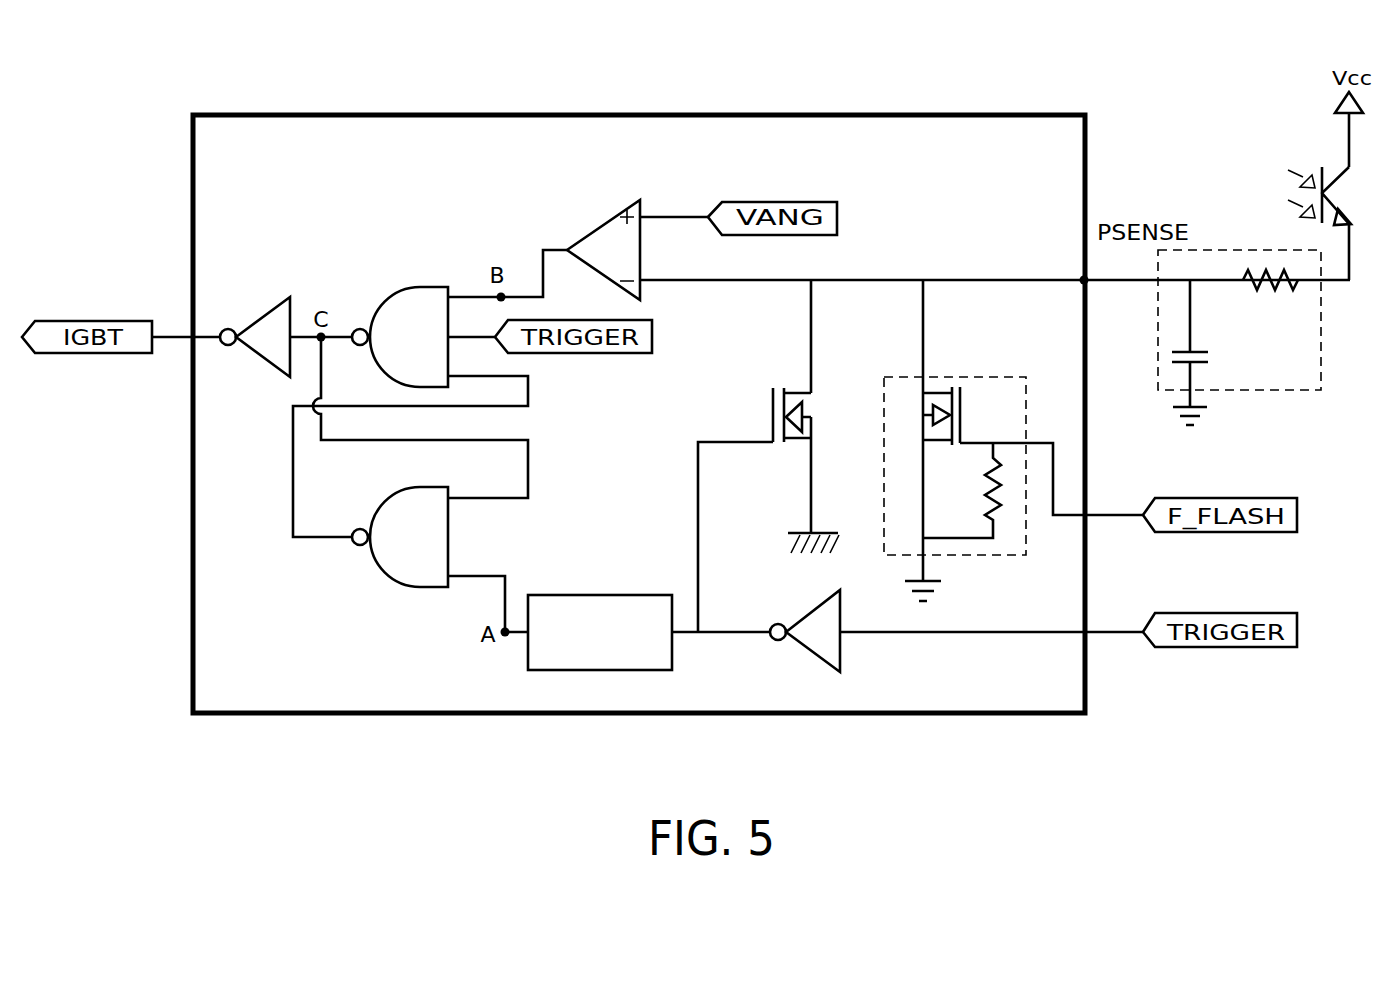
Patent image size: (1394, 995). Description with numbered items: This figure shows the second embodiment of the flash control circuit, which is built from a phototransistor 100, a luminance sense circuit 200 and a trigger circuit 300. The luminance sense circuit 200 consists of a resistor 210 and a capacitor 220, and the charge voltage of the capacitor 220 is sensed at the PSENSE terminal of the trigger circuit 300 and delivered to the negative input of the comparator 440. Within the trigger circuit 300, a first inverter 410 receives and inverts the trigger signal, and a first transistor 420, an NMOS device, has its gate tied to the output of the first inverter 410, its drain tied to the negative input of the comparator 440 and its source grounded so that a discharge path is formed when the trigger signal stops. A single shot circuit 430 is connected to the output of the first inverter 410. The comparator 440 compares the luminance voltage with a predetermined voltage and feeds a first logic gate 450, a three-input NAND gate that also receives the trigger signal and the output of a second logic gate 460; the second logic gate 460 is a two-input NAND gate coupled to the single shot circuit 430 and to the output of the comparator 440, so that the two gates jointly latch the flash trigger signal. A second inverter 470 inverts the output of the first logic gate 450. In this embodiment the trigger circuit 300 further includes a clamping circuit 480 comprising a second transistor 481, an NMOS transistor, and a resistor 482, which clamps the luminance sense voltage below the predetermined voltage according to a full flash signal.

The phototransistor 100 is at (1319, 182).
The luminance sense circuit 200 is at (1239, 351).
The resistor 210 is at (1270, 294).
The capacitor 220 is at (1207, 352).
The trigger circuit 300 is at (404, 115).
The first inverter 410 is at (817, 607).
The first transistor 420 is at (784, 416).
The single shot circuit 430 is at (620, 595).
The comparator 440 is at (597, 228).
The first logic gate 450 is at (415, 285).
The second logic gate 460 is at (393, 498).
The second inverter 470 is at (273, 311).
The clamping circuit 480 is at (1013, 440).
The second transistor 481 is at (967, 416).
The resistor 482 is at (962, 490).